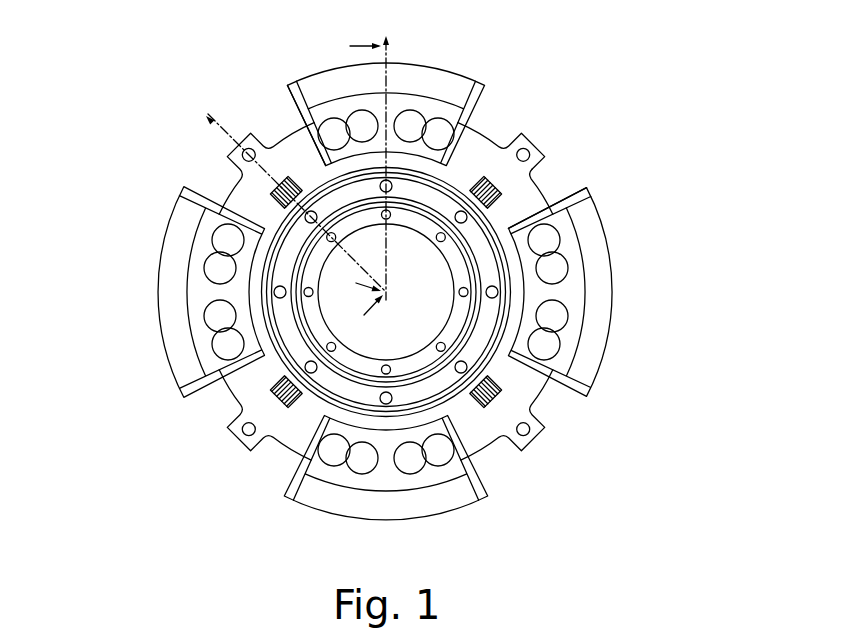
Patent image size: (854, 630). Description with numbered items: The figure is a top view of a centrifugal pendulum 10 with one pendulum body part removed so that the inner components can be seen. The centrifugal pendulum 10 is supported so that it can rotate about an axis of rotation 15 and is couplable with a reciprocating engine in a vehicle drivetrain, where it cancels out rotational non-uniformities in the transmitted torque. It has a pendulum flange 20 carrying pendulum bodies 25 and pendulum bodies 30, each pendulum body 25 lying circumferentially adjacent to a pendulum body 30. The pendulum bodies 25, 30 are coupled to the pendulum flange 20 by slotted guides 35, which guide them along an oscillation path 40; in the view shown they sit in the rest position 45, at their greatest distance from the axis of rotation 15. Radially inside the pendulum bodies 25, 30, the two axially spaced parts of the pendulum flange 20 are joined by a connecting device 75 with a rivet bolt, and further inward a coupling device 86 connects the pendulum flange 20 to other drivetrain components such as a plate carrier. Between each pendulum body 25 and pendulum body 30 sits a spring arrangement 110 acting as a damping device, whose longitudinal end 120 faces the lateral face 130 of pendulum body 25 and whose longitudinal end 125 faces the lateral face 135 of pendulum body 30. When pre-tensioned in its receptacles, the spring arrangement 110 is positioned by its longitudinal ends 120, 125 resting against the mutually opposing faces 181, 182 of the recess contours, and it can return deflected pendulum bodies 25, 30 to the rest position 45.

The centrifugal pendulum 10 is at (390, 293).
The axis of rotation 15 is at (298, 84).
The pendulum flange 20 is at (537, 387).
The pendulum body 25 is at (438, 108).
The pendulum body 30 is at (203, 362).
The slotted guide 35 is at (469, 124).
The oscillation path 40 is at (424, 126).
The rest position 45 is at (303, 102).
The connecting device 75 is at (242, 183).
The coupling device 86 is at (393, 358).
The spring arrangement 110 is at (268, 145).
The longitudinal end 120 is at (494, 172).
The longitudinal end 125 is at (538, 198).
The lateral face 130 is at (529, 136).
The lateral face 135 is at (542, 215).
The face of recess contour 181 is at (280, 214).
The face of recess contour 182 is at (279, 168).